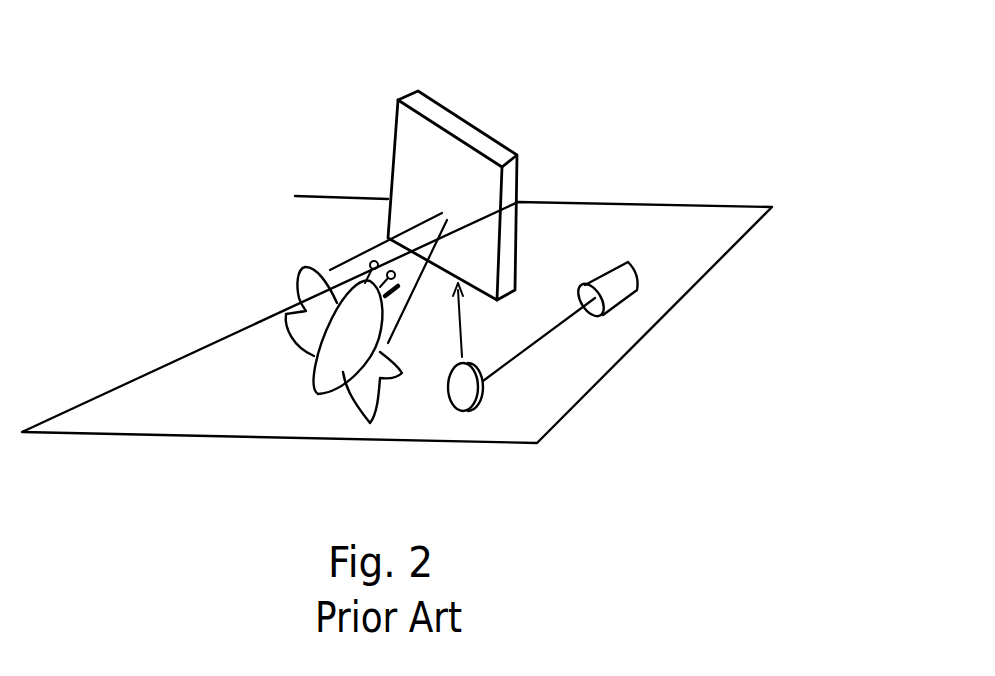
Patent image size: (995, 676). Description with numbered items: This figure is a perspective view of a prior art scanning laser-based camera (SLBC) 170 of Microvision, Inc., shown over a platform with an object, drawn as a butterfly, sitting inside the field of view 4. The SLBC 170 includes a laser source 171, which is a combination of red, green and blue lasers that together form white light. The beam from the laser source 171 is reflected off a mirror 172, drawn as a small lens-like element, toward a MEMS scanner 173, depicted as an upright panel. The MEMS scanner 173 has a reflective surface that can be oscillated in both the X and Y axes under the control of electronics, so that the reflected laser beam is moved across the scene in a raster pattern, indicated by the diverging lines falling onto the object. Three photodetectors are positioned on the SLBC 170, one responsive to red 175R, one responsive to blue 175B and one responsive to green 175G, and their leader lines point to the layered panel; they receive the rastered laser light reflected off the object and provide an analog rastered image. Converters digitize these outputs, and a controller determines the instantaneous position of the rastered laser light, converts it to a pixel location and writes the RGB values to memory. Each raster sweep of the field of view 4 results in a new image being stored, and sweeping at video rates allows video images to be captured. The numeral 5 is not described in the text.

The scanning laser-based camera (SLBC) 170 is at (157, 238).
The laser source 171 is at (637, 297).
The mirror 172 is at (478, 408).
The MEMS scanner 173 is at (520, 263).
The green photodetector 175G is at (452, 105).
The red photodetector 175R is at (475, 120).
The blue photodetector 175B is at (498, 135).
The field of view 4 is at (284, 315).
The projected image light 5 is at (355, 255).